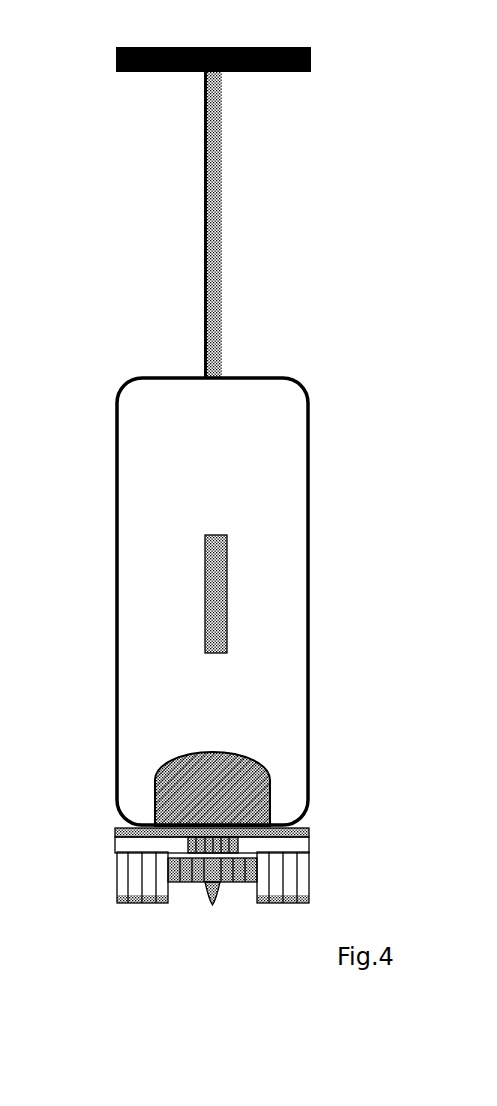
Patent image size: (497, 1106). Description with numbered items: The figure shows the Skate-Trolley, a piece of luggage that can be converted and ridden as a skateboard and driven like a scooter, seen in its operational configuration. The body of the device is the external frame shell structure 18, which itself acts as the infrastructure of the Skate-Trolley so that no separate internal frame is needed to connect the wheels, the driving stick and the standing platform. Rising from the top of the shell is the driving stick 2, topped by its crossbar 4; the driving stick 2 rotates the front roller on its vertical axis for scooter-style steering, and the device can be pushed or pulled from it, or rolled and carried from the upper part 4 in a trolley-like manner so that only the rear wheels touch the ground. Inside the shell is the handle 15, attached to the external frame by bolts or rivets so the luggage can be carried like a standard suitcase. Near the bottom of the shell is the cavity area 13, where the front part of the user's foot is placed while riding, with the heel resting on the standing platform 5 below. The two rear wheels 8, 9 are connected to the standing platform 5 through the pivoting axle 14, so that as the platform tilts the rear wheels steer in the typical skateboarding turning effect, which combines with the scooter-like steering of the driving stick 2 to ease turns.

The driving stick 2 is at (198, 161).
The driving stick 4 is at (112, 58).
The standing platform 5 is at (143, 832).
The rear wheel 8 is at (140, 890).
The rear wheel 9 is at (295, 888).
The cavity area 13 is at (200, 775).
The pivoting axle 14 is at (230, 878).
The handle 15 is at (200, 544).
The external frame shell structure 18 is at (254, 372).